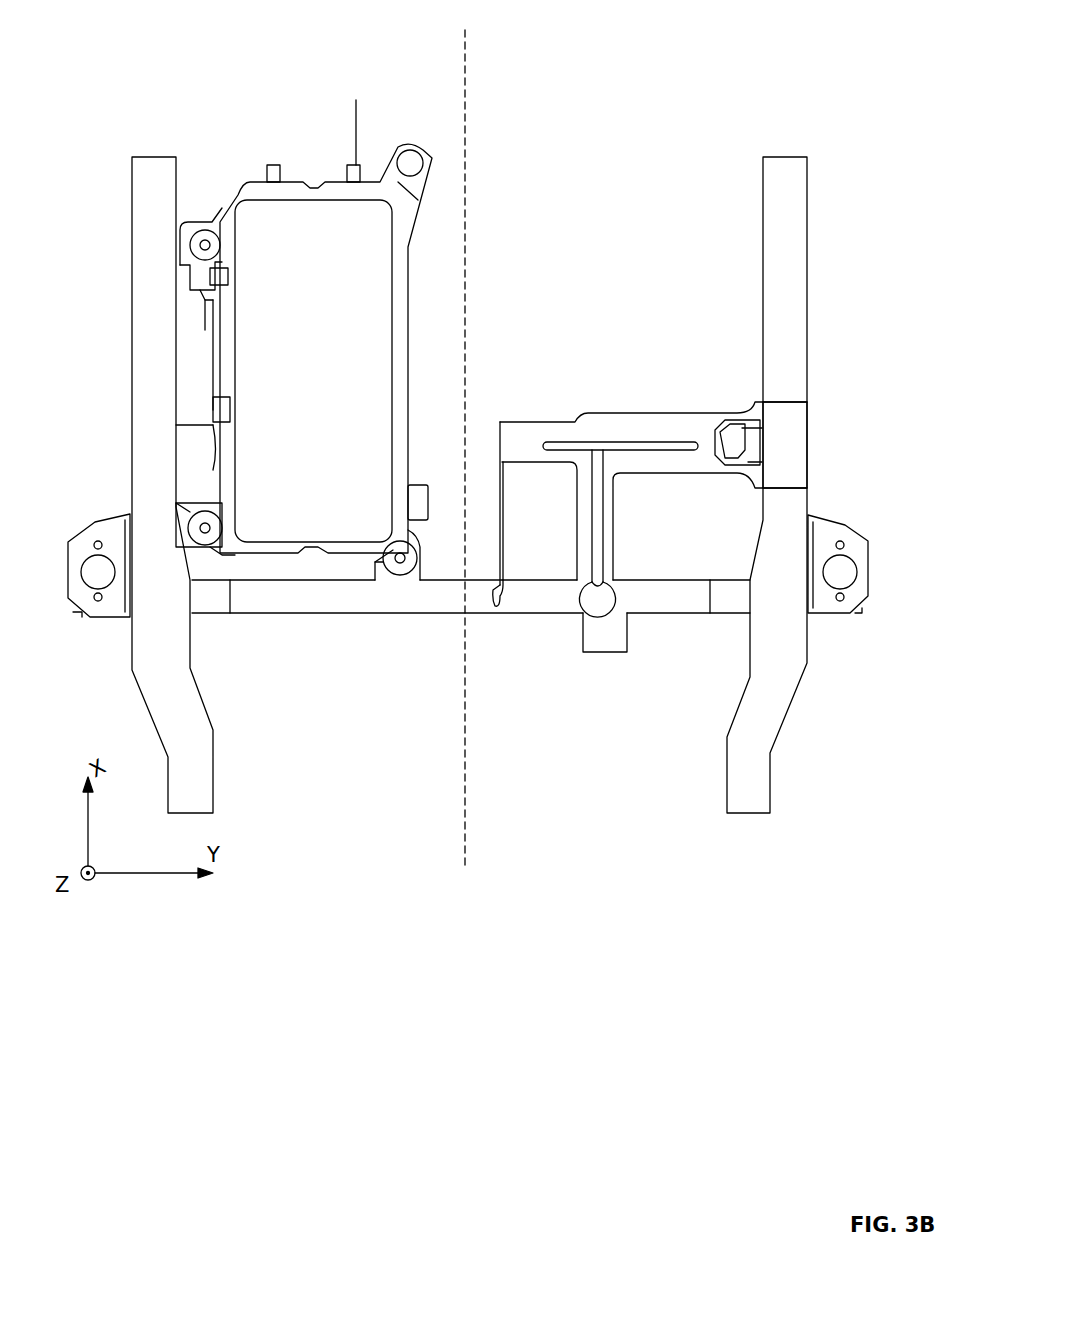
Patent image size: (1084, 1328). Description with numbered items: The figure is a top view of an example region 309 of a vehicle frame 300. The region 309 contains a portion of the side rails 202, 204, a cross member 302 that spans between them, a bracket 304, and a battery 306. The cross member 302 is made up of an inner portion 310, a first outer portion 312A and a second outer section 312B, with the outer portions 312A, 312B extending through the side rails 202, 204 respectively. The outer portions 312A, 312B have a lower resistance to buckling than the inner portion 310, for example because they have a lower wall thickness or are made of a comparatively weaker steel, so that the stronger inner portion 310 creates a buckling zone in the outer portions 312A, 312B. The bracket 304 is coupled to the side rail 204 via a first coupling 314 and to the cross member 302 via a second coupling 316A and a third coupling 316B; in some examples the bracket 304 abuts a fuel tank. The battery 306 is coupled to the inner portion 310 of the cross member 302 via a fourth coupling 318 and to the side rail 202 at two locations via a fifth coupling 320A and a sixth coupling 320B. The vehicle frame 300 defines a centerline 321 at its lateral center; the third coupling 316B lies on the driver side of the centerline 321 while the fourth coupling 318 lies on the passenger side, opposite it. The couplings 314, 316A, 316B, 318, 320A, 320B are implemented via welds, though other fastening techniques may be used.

The side rail 202 is at (130, 666).
The side rail 204 is at (808, 656).
The vehicle frame 300 is at (749, 68).
The cross member 302 is at (471, 652).
The bracket 304 is at (691, 491).
The battery 306 is at (410, 275).
The region 309 is at (672, 122).
The inner portion 310 is at (568, 612).
The first outer portion 312A is at (200, 613).
The second outer section 312B is at (745, 613).
The first coupling 314 is at (808, 392).
The second coupling 316A is at (614, 578).
The third coupling 316B is at (503, 577).
The fourth coupling 318 is at (410, 582).
The fifth coupling 320A is at (186, 505).
The sixth coupling 320B is at (182, 237).
The centerline 321 is at (466, 50).